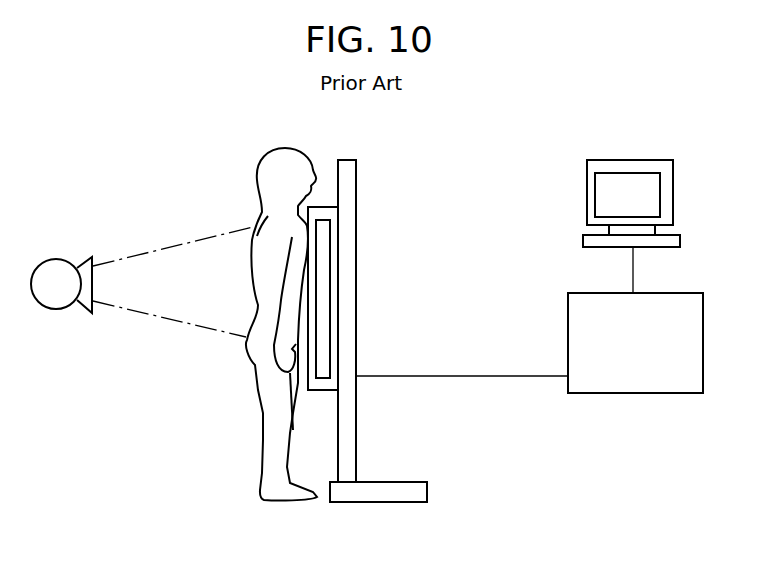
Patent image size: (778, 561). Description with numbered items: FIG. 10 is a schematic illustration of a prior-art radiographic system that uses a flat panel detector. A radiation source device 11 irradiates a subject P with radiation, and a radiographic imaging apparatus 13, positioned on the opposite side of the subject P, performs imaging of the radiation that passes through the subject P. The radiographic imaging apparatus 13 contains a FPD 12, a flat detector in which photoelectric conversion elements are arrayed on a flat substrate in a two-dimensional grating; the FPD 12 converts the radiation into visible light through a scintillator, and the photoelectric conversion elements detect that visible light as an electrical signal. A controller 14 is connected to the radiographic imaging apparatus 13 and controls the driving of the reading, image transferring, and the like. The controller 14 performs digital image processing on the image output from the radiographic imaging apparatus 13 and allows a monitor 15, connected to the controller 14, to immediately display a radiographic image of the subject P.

The radiation source device 11 is at (55, 258).
The subject P is at (282, 146).
The radiographic imaging apparatus 13 is at (337, 291).
The FPD 12 is at (323, 328).
The controller 14 is at (632, 373).
The monitor 15 is at (631, 187).